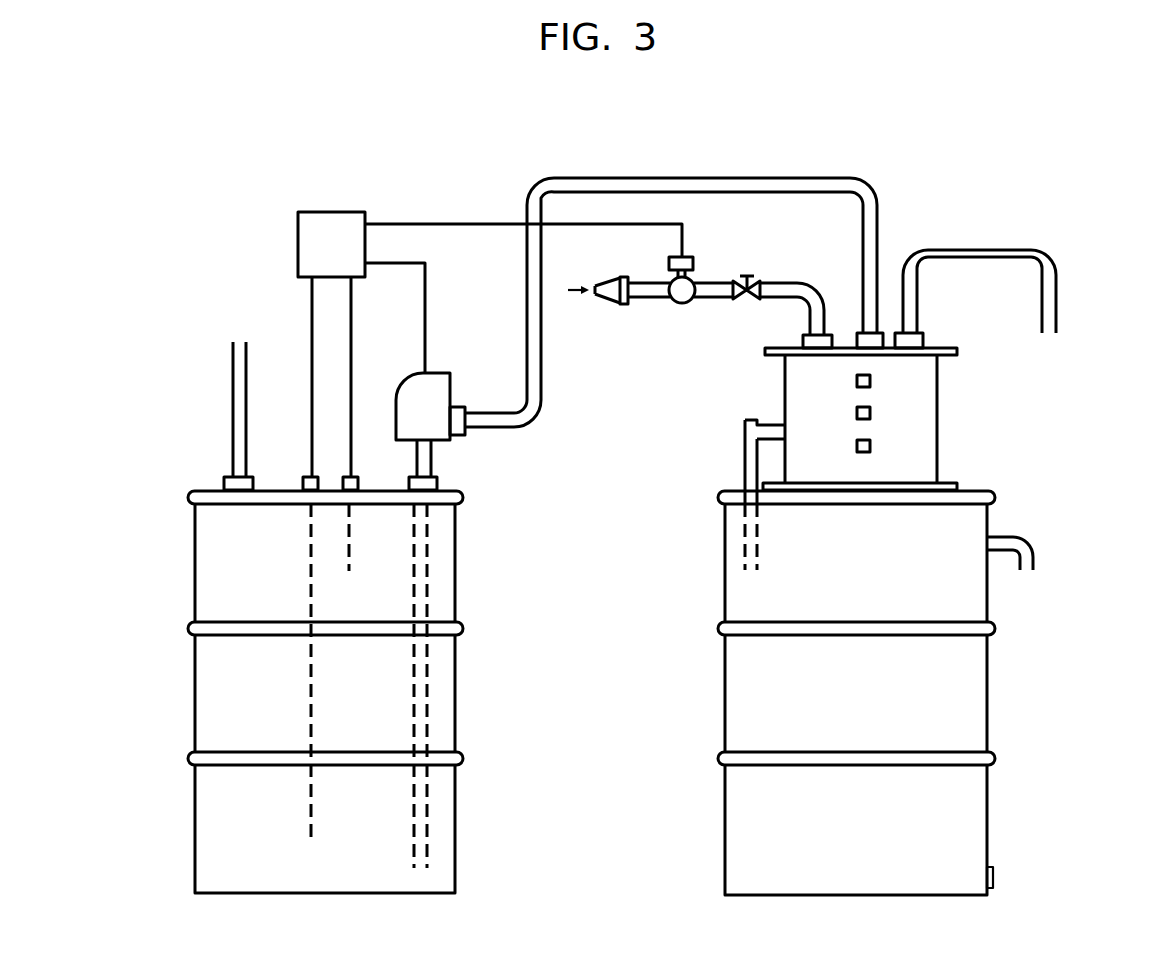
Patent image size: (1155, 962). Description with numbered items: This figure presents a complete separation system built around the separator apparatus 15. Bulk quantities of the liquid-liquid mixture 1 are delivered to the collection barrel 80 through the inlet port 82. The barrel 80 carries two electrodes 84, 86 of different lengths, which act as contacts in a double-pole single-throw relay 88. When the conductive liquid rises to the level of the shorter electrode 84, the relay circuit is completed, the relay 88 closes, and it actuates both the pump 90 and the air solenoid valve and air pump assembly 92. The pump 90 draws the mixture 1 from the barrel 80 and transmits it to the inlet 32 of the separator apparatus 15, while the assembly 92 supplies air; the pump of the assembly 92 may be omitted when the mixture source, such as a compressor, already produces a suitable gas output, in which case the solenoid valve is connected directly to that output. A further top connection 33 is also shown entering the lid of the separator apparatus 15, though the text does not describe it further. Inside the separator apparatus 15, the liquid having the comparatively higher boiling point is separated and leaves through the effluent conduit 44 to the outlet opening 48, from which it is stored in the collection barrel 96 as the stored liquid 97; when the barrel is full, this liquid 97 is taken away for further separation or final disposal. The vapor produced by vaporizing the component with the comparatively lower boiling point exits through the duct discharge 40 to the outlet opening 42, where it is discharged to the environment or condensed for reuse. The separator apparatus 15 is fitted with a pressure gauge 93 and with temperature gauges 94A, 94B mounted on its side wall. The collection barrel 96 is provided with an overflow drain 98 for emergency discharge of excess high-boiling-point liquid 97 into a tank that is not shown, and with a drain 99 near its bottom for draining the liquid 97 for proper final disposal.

The liquid-liquid mixture 1 is at (239, 328).
The separator apparatus 15 is at (785, 374).
The inlet 32 is at (886, 333).
The gas inlet conduit 33 is at (833, 332).
The duct discharge 40 is at (1057, 308).
The outlet opening 42 is at (1048, 333).
The effluent conduit 44 is at (745, 460).
The outlet opening 48 is at (752, 570).
The collection barrel 80 is at (195, 570).
The inlet port 82 is at (232, 407).
The shorter electrode 84 is at (349, 537).
The electrode 86 is at (308, 830).
The double-pole single-throw relay 88 is at (332, 212).
The pump 90 is at (452, 441).
The air solenoid valve and air pump assembly 92 is at (697, 257).
The pressure gauge 93 is at (870, 412).
The temperature gauge 94A is at (870, 446).
The temperature gauge 94B is at (870, 381).
The collection barrel 96 is at (725, 828).
The stored liquid having comparatively higher boiling point 97 is at (855, 698).
The overflow drain 98 is at (1027, 572).
The drain 99 is at (993, 875).